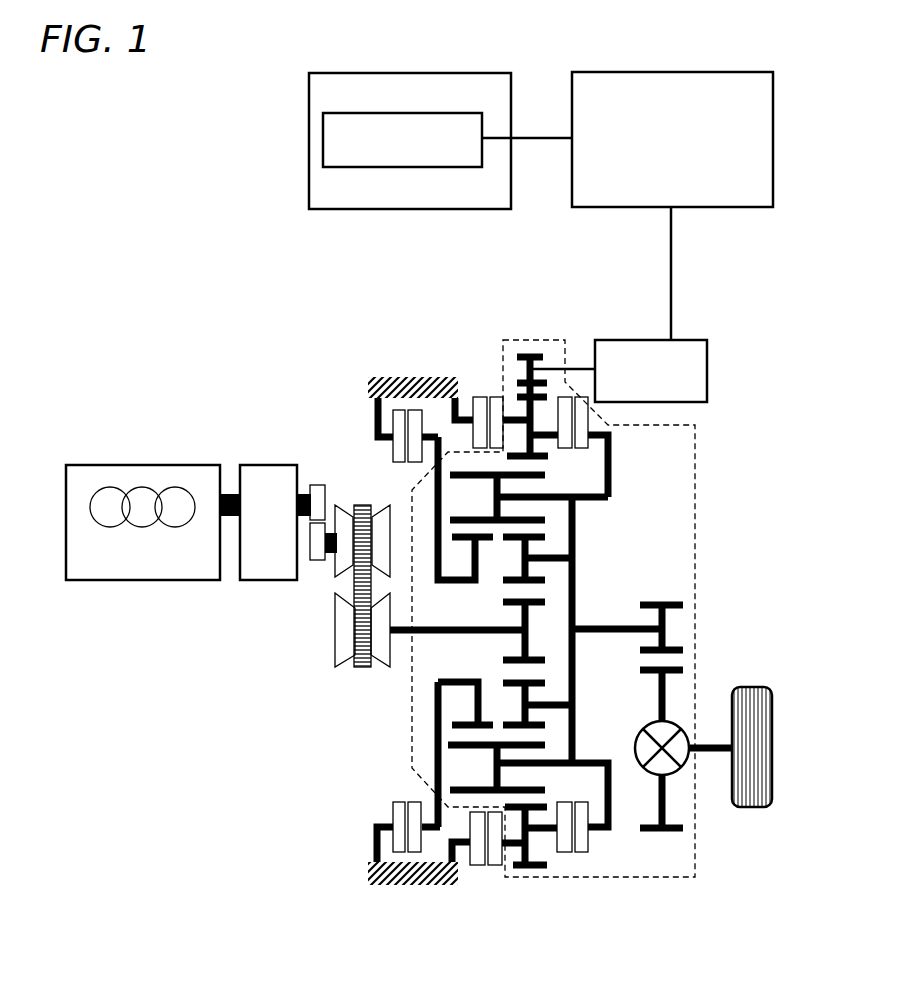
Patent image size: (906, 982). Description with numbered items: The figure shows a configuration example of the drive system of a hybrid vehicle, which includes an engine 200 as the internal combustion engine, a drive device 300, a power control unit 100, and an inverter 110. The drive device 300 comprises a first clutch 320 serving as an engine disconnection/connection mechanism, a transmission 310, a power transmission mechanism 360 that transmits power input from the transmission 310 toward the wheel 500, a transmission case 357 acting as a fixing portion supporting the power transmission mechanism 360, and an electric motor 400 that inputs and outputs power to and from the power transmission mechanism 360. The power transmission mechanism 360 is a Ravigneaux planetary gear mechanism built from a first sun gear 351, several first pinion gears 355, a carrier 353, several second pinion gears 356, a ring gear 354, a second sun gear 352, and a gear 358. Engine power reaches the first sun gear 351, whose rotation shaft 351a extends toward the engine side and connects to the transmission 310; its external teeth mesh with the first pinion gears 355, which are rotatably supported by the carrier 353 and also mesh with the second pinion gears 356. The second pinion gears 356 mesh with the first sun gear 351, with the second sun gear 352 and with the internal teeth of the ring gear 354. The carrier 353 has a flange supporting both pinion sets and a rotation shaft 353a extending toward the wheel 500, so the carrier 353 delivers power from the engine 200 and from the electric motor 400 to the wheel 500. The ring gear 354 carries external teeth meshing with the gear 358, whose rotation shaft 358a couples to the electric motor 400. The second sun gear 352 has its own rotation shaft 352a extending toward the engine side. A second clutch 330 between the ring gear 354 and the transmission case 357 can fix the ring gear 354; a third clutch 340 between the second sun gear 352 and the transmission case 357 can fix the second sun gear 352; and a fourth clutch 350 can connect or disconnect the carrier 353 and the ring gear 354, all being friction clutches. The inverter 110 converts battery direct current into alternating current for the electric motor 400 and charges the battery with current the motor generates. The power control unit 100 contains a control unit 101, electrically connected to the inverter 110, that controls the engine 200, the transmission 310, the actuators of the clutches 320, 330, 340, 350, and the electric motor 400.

The power control unit 100 is at (424, 72).
The control unit 101 is at (457, 113).
The inverter 110 is at (694, 72).
The engine 200 is at (88, 465).
The drive device 300 is at (313, 358).
The transmission 310 is at (333, 640).
The first clutch 320 is at (256, 465).
The second clutch 330 is at (493, 397).
The third clutch 340 is at (395, 862).
The fourth clutch 350 is at (580, 852).
The first sun gear 351 is at (535, 617).
The rotation shaft 351a is at (432, 634).
The second sun gear 352 is at (447, 726).
The rotation shaft 352a is at (457, 687).
The carrier 353 is at (580, 578).
The rotation shaft 353a is at (590, 633).
The ring gear 354 is at (533, 870).
The first pinion gear 355 is at (548, 535).
The second pinion gear 356 is at (465, 470).
The transmission case 357 is at (372, 377).
The gear 358 is at (525, 352).
The rotation shaft 358a is at (574, 369).
The power transmission mechanism 360 is at (640, 883).
The electric motor 400 is at (690, 340).
The wheel 500 is at (745, 687).